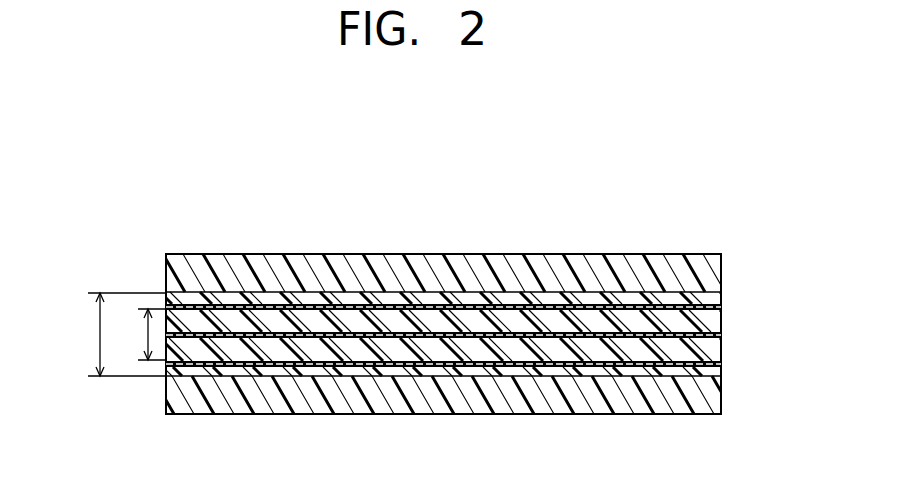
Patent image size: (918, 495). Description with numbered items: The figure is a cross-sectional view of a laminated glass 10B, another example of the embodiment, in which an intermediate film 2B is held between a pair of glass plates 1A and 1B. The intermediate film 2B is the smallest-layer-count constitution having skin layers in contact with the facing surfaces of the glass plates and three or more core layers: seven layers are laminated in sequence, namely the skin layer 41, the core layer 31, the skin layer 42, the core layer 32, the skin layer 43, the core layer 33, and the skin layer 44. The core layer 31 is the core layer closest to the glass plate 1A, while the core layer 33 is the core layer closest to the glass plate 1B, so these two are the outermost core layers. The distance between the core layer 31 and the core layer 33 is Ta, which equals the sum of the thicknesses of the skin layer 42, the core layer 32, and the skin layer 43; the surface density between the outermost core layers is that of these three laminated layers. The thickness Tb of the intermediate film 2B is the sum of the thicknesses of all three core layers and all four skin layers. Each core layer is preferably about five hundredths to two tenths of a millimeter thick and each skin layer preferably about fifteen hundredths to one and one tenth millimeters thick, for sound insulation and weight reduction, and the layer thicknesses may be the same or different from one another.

The laminated glass 10B is at (448, 240).
The glass plate 1B is at (678, 255).
The glass plate 1A is at (673, 414).
The intermediate film 2B is at (73, 291).
The skin layer 44 is at (721, 297).
The core layer 33 is at (721, 306).
The skin layer 43 is at (721, 319).
The core layer 32 is at (721, 335).
The skin layer 42 is at (721, 350).
The core layer 31 is at (721, 365).
The skin layer 41 is at (721, 378).
The thickness of the intermediate film Tb is at (119, 334).
The distance between the outermost core layers Ta is at (145, 334).